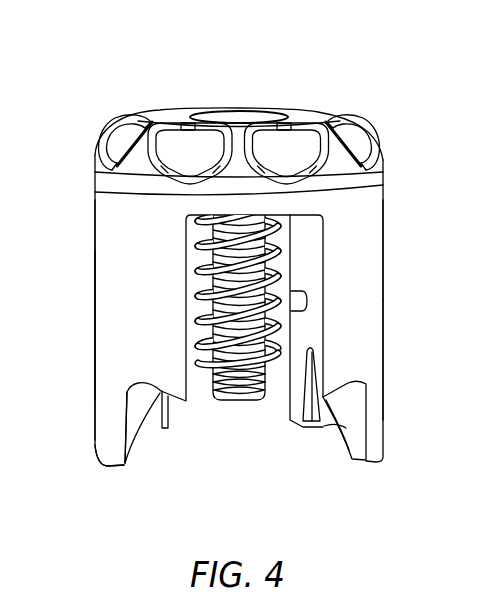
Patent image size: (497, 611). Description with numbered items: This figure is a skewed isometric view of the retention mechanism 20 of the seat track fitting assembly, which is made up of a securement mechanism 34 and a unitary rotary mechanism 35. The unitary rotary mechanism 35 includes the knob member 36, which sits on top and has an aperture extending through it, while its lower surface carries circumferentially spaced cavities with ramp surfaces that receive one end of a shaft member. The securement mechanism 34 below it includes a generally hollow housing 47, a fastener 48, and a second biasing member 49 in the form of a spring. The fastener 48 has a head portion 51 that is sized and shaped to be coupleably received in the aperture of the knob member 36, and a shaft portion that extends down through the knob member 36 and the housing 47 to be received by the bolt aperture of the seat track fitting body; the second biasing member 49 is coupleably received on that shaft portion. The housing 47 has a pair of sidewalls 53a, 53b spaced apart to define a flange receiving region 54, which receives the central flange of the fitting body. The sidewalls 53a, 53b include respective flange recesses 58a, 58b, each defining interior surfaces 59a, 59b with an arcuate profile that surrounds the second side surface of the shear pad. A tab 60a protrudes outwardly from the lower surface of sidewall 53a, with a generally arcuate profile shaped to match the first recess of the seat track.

The retention mechanism 20 is at (114, 62).
The securement mechanism 34 is at (80, 244).
The unitary rotary mechanism 35 is at (384, 119).
The knob member 36 is at (305, 118).
The housing 47 is at (377, 262).
The fastener 48 is at (262, 403).
The second biasing member 49 is at (278, 363).
The head portion 51 is at (238, 112).
The sidewall 53a is at (377, 350).
The sidewall 53b is at (102, 320).
The flange receiving region 54 is at (197, 388).
The flange recess 58a is at (328, 454).
The flange recess 58b is at (144, 434).
The interior surface 59a is at (362, 424).
The interior surface 59b is at (147, 403).
The tab 60a is at (338, 430).